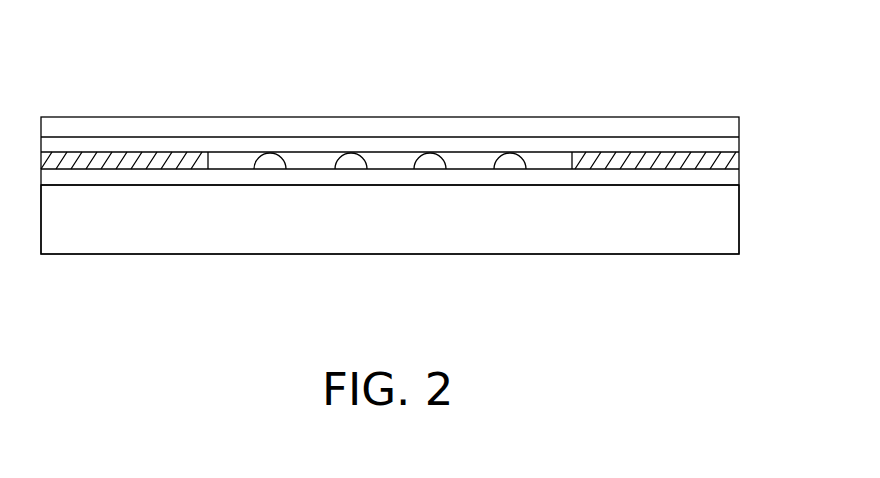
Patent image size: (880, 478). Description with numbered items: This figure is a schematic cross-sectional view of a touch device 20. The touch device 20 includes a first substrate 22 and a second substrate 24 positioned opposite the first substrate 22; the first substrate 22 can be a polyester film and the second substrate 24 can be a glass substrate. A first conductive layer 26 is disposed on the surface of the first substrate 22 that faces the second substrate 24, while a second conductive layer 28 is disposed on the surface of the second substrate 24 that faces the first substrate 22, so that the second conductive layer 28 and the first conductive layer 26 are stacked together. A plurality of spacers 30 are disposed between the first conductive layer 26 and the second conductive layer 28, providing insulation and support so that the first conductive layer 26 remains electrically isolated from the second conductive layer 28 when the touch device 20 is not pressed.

The touch device 20 is at (692, 101).
The first substrate 22 is at (606, 130).
The second substrate 24 is at (713, 222).
The first conductive layer 26 is at (722, 146).
The second conductive layer 28 is at (722, 178).
The spacers 30 is at (432, 152).